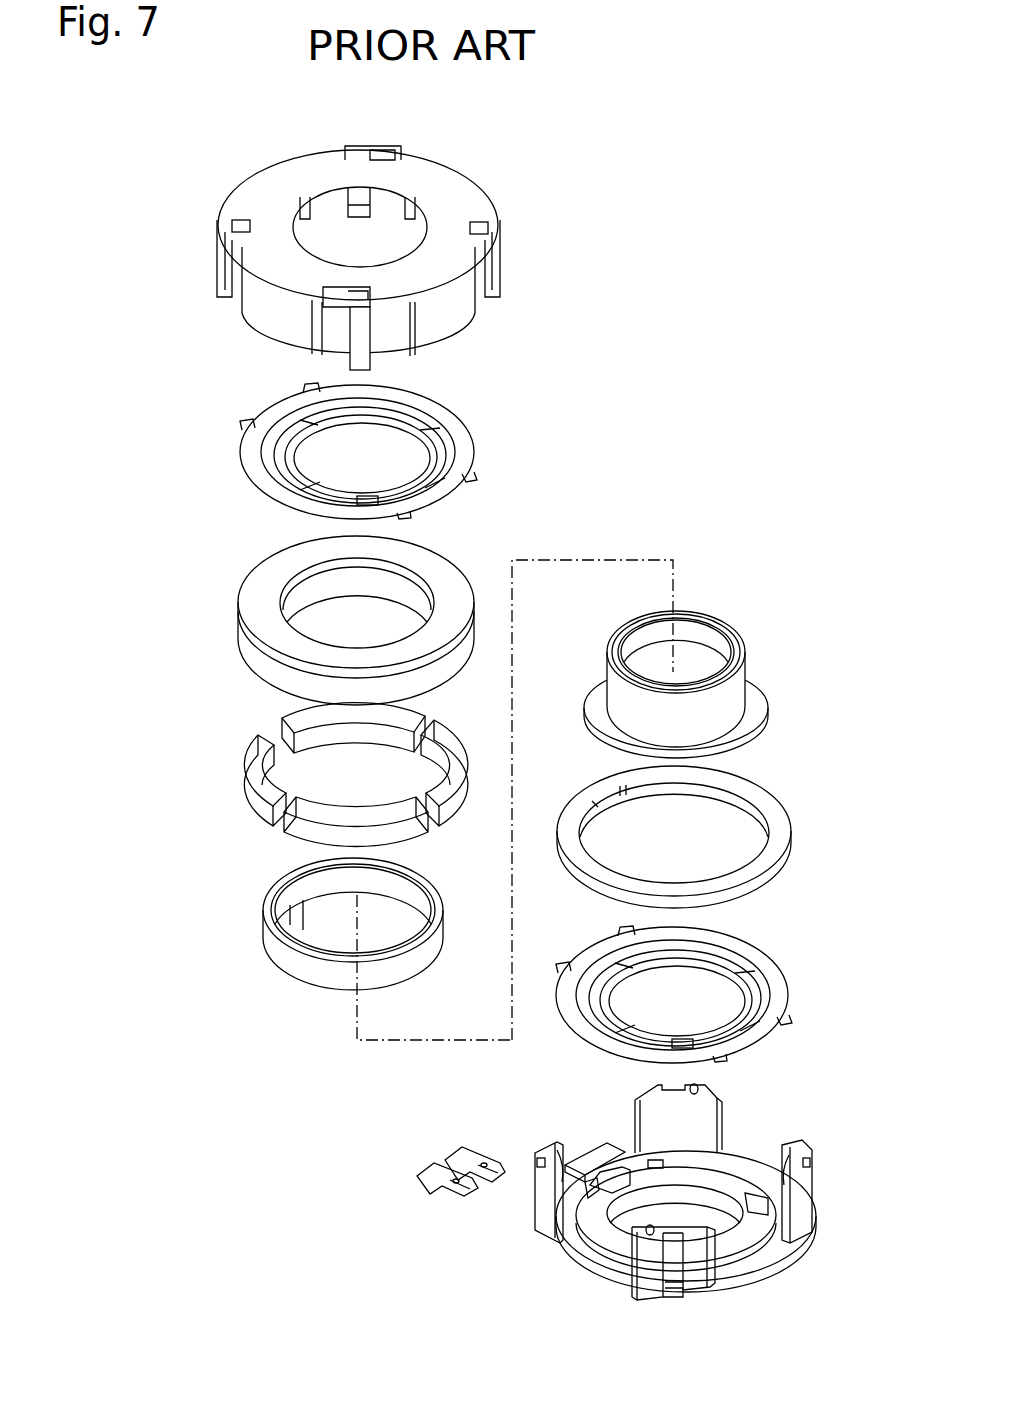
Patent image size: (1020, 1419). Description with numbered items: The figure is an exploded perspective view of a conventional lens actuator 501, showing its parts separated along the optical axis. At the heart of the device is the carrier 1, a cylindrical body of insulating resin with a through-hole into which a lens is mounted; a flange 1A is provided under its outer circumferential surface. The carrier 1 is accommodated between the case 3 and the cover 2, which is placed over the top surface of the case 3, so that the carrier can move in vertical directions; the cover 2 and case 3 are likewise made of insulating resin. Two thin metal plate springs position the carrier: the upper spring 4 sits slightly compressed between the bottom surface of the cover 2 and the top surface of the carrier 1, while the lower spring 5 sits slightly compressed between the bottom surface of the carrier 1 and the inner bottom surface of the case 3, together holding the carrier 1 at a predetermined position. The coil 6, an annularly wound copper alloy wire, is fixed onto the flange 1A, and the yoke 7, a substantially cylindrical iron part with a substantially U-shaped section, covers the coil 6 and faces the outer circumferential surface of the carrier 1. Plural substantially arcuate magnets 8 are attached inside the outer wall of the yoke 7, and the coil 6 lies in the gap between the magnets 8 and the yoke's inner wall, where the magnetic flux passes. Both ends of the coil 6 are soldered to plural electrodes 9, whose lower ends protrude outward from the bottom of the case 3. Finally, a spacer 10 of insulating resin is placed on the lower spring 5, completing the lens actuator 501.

The lens actuator 501 is at (730, 432).
The carrier 1 is at (748, 640).
The flange 1A is at (765, 690).
The cover 2 is at (240, 195).
The case 3 is at (772, 1262).
The upper spring 4 is at (252, 415).
The lower spring 5 is at (790, 982).
The coil 6 is at (275, 960).
The yoke 7 is at (255, 580).
The magnets 8 is at (296, 840).
The electrodes 9 is at (420, 1168).
The spacer 10 is at (790, 820).